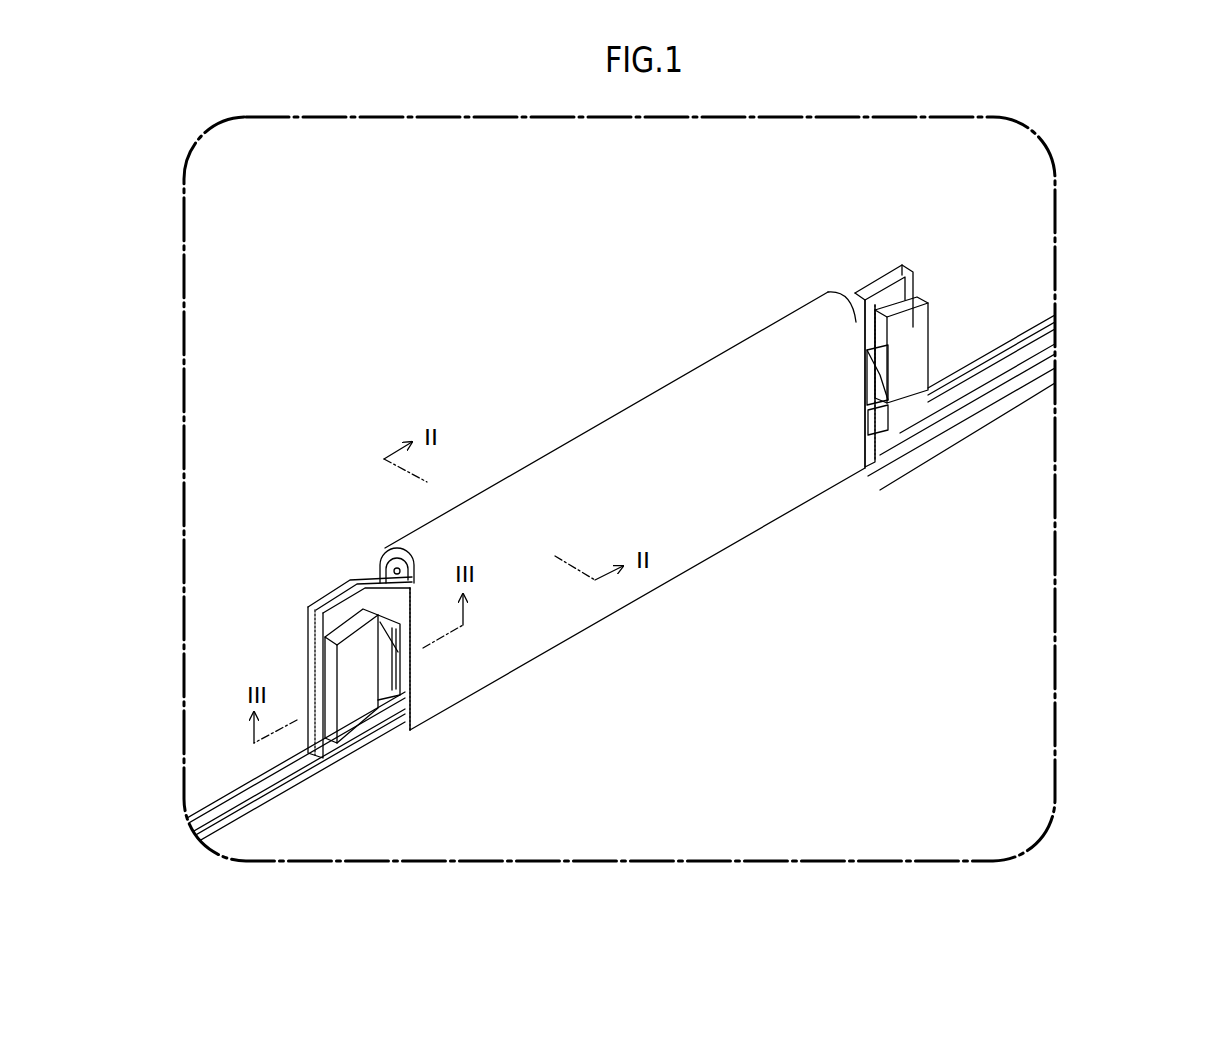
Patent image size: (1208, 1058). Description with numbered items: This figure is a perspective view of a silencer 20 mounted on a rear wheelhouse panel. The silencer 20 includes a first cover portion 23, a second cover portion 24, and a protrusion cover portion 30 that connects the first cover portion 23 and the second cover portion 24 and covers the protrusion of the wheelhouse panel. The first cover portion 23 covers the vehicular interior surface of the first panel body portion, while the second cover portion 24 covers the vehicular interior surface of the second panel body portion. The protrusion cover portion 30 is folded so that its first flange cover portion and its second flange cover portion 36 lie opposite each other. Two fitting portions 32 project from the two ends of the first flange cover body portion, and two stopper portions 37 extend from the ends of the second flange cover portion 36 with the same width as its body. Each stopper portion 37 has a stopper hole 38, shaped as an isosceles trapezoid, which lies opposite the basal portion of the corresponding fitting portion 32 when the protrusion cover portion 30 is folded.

The silencer 20 is at (1072, 549).
The first cover portion 23 is at (1010, 250).
The second cover portion 24 is at (1010, 480).
The protrusion cover portion 30 is at (771, 325).
The fitting portion 32 is at (350, 705).
The second flange cover portion 36 is at (750, 495).
The stopper portion 37 is at (330, 595).
The stopper hole 38 is at (390, 653).